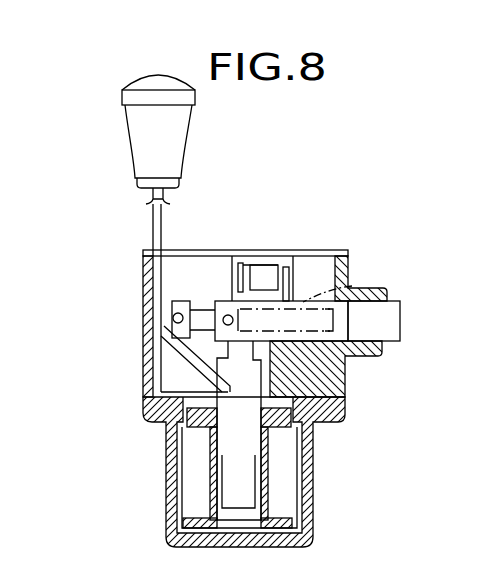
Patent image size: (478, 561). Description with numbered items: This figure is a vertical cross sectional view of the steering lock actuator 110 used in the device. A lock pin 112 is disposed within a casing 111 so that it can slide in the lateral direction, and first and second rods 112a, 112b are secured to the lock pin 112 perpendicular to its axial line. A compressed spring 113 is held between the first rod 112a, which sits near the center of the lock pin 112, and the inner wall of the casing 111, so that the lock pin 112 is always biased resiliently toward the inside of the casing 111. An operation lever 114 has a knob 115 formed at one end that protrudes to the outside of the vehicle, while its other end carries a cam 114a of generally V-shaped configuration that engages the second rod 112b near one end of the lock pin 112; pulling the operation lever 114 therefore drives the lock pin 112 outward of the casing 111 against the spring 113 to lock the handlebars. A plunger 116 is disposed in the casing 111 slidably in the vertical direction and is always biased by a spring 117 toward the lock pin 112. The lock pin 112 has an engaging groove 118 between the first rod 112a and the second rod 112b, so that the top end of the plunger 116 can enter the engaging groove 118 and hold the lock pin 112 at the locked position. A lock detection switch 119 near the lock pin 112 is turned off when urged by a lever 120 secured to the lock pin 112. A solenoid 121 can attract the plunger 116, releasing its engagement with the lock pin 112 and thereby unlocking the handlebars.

The steering lock actuator 110 is at (410, 482).
The casing 111 is at (142, 387).
The lock pin 112 is at (393, 345).
The first rod 112a is at (224, 312).
The second rod 112b is at (177, 317).
The compressed spring 113 is at (352, 286).
The operation lever 114 is at (152, 230).
The cam 114a is at (148, 358).
The knob 115 is at (122, 95).
The plunger 116 is at (228, 442).
The spring 117 is at (212, 488).
The engaging groove 118 is at (210, 330).
The lock detection switch 119 is at (266, 273).
The lever 120 is at (286, 275).
The solenoid 121 is at (284, 507).